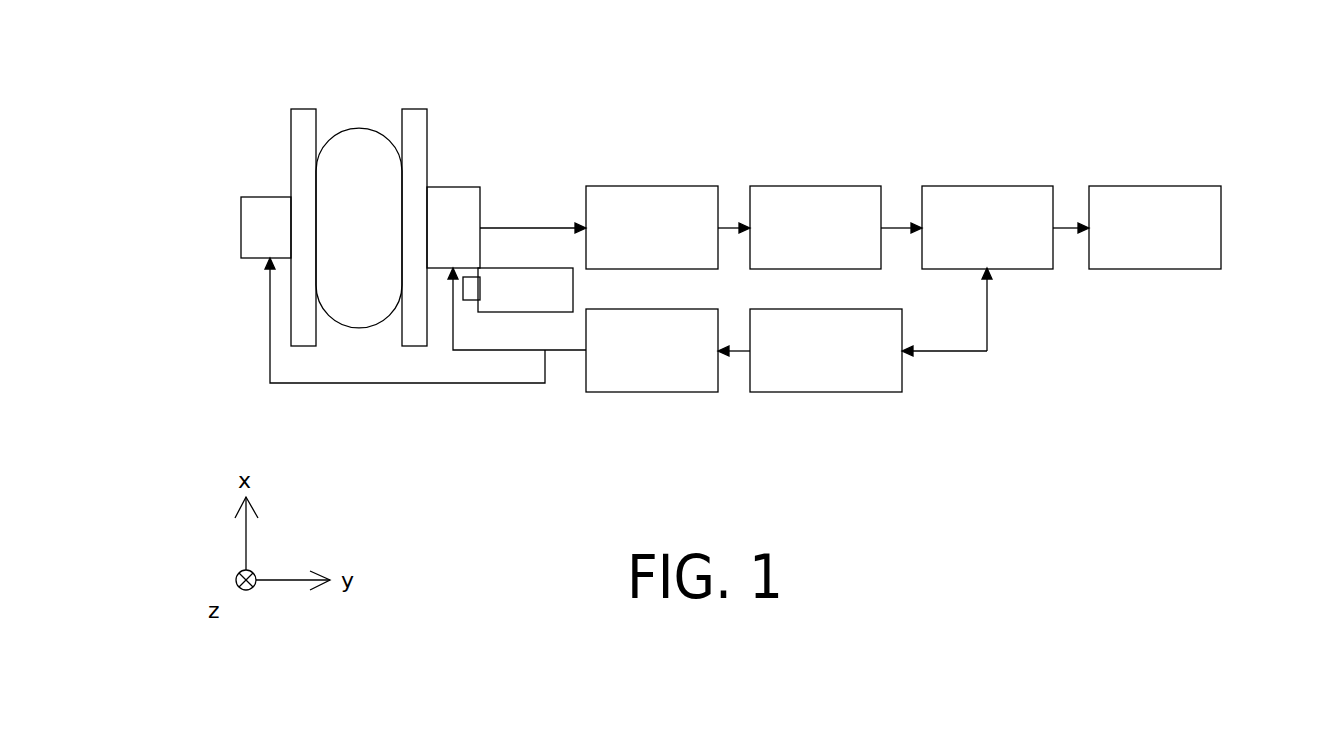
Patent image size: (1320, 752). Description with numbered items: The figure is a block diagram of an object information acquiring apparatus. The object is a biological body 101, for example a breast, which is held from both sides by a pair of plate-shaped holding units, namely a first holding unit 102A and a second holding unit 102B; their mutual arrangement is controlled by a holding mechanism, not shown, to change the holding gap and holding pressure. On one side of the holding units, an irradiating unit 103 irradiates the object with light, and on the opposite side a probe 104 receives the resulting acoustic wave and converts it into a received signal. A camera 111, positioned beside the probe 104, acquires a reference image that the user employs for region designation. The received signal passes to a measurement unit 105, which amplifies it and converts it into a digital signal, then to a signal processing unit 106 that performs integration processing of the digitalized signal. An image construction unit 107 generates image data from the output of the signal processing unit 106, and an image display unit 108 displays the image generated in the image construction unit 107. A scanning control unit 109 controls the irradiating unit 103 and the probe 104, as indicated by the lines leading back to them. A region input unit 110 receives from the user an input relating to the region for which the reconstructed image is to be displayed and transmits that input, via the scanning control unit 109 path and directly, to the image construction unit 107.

The biological body 101 is at (360, 328).
The first holding unit 102A is at (412, 109).
The second holding unit 102B is at (303, 109).
The irradiating unit 103 is at (268, 197).
The probe 104 is at (453, 187).
The measurement unit 105 is at (670, 186).
The signal processing unit 106 is at (833, 186).
The image construction unit 107 is at (1000, 186).
The image display unit 108 is at (1152, 186).
The scanning control unit 109 is at (653, 309).
The region input unit 110 is at (825, 309).
The camera 111 is at (490, 312).